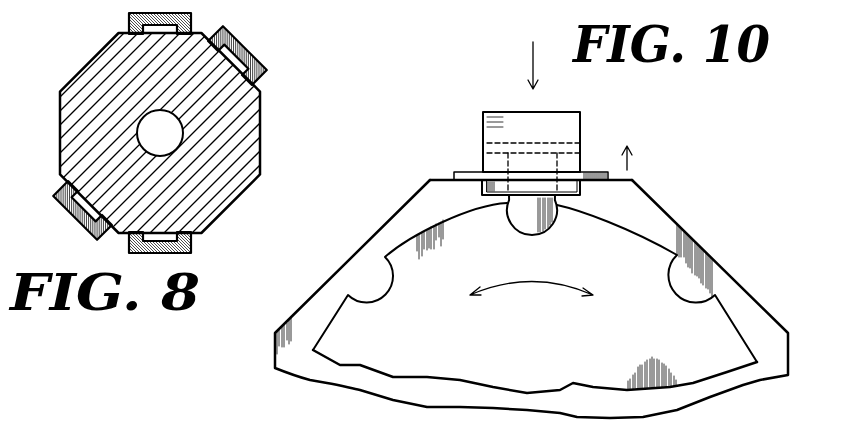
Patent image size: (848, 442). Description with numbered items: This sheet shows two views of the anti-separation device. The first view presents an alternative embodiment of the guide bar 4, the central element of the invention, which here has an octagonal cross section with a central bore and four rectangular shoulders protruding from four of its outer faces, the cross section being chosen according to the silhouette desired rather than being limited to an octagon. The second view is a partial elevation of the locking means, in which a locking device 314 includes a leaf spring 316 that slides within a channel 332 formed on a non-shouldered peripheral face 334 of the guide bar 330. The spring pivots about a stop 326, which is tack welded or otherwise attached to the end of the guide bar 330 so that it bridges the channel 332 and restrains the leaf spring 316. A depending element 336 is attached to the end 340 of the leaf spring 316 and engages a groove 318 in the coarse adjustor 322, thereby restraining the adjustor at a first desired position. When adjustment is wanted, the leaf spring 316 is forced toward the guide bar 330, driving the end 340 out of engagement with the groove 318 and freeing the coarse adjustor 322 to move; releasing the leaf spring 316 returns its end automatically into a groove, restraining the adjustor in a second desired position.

In FIG. 8, the guide bar 4 is at (227, 190).
In FIG. 10, the locking device 314 is at (618, 106).
In FIG. 10, the leaf spring 316 is at (485, 122).
In FIG. 10, the groove 318 is at (537, 236).
In FIG. 10, the coarse adjustor 322 is at (632, 248).
In FIG. 10, the stop 326 is at (460, 173).
In FIG. 10, the guide bar 330 is at (390, 220).
In FIG. 10, the channel 332 is at (583, 193).
In FIG. 10, the non-shouldered peripheral face 334 is at (632, 180).
In FIG. 10, the depending element 336 is at (512, 211).
In FIG. 10, the end of leaf spring 340 is at (495, 183).